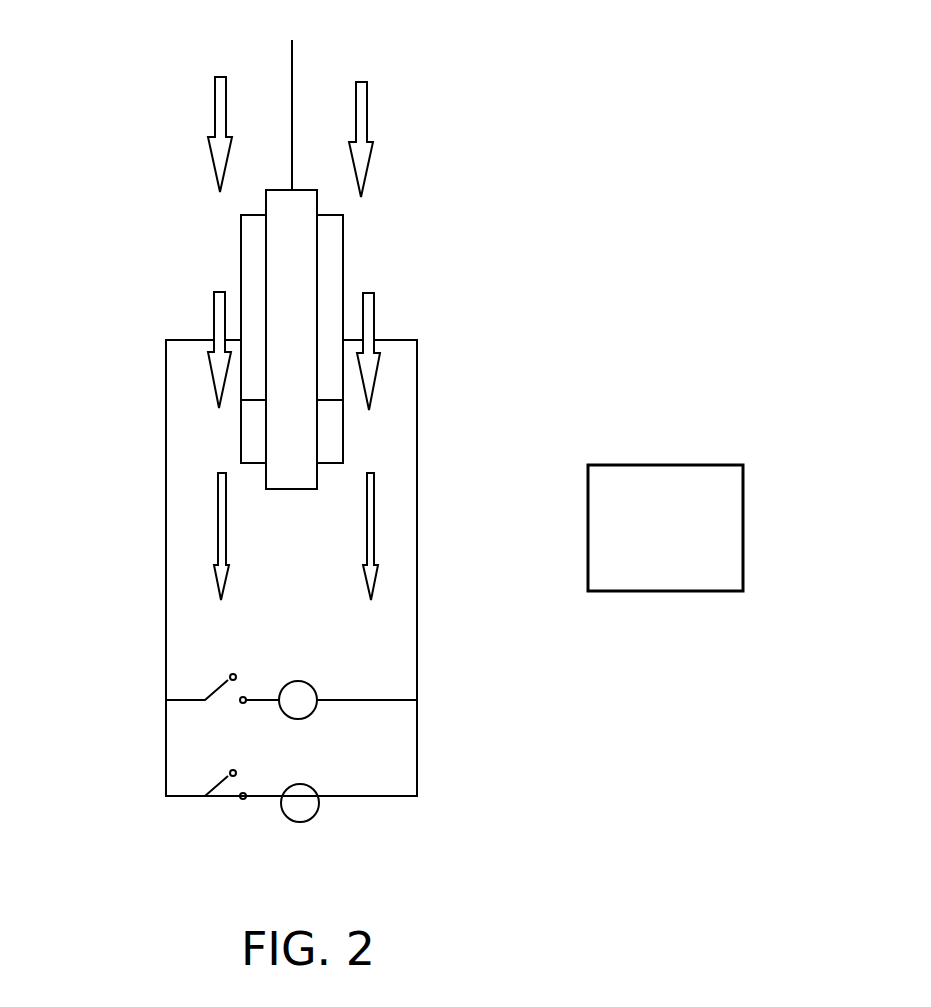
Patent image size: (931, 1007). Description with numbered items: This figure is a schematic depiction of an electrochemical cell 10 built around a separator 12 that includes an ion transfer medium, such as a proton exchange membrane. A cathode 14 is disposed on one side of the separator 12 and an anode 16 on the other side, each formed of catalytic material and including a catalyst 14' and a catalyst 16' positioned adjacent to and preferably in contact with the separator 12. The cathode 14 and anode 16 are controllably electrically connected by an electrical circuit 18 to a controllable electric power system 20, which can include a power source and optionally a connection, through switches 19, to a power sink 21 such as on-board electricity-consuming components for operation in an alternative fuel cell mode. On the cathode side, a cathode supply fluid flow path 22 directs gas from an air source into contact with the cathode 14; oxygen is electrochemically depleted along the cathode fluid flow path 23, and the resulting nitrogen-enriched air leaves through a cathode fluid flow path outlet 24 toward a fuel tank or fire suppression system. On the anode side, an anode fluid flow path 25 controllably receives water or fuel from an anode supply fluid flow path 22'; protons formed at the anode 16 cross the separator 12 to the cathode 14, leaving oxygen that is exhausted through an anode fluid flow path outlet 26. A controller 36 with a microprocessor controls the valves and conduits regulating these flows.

The electrochemical cell 10 is at (592, 86).
The separator 12 is at (291, 246).
The cathode 14 is at (266, 390).
The catalyst 14' is at (270, 499).
The anode 16 is at (323, 390).
The catalyst 16' is at (323, 499).
The electrical circuit 18 is at (417, 371).
The switches 19 is at (219, 688).
The electric power system 20 is at (302, 724).
The power sink 21 is at (313, 813).
The cathode supply fluid flow path 22 is at (153, 134).
The anode supply fluid flow path 22' is at (425, 134).
The cathode fluid flow path 23 is at (214, 312).
The cathode fluid flow path outlet 24 is at (218, 527).
The anode fluid flow path 25 is at (377, 328).
The anode fluid flow path outlet 26 is at (374, 542).
The controller 36 is at (695, 591).